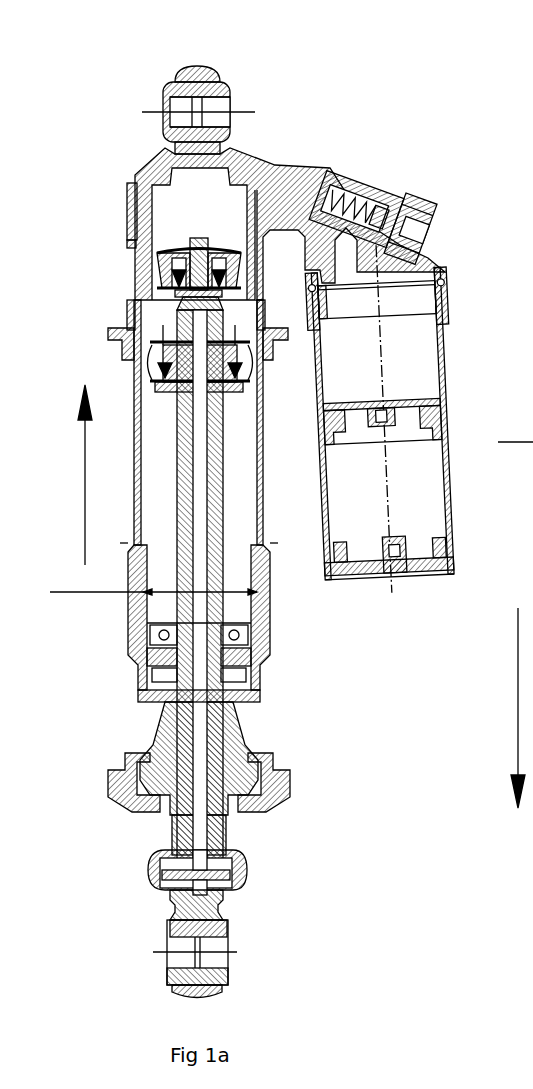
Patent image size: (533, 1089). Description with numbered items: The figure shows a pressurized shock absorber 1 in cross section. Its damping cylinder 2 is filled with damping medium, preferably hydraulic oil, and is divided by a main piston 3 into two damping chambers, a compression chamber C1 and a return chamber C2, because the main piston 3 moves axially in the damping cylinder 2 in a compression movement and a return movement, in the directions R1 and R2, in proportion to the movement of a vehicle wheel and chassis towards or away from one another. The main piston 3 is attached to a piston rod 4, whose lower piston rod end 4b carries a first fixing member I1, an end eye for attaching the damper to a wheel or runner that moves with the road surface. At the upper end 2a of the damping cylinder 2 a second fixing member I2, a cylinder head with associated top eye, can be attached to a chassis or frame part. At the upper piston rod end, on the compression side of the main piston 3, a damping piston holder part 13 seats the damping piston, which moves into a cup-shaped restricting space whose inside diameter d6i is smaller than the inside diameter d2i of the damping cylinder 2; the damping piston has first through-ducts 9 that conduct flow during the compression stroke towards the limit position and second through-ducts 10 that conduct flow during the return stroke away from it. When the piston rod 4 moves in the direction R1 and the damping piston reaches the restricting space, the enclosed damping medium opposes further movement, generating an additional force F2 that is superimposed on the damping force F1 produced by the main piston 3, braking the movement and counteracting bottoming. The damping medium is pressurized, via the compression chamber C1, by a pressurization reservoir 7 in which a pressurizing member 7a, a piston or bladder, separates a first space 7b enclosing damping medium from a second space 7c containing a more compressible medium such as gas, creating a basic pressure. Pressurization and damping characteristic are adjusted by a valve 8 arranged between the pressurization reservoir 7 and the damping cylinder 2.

The shock absorber 1 is at (137, 132).
The second fixing member I2 is at (188, 68).
The upper end of the damping cylinder 2a is at (267, 187).
The damping piston holder part 13 is at (130, 183).
The first through-ducts 9 is at (130, 240).
The compression chamber C1 is at (128, 303).
The damping cylinder 2 is at (136, 385).
The main piston 3 is at (110, 334).
The additional force F2 is at (215, 238).
The damping force F1 is at (235, 330).
The piston rod 4 is at (183, 702).
The lower piston rod end 4b is at (178, 322).
The return chamber C2 is at (160, 605).
The first fixing member I1 is at (170, 975).
The pressurization reservoir 7 is at (445, 353).
The pressurizing member 7a is at (445, 403).
The first space 7b is at (397, 357).
The second space 7c is at (422, 503).
The valve 8 is at (383, 188).
The direction R1 is at (74, 475).
The direction R2 is at (507, 708).
The inside diameter of the damping cylinder d2i is at (153, 585).
The inside diameter of the restricting space d6i is at (515, 433).
The second through-ducts 10 is at (532, 487).